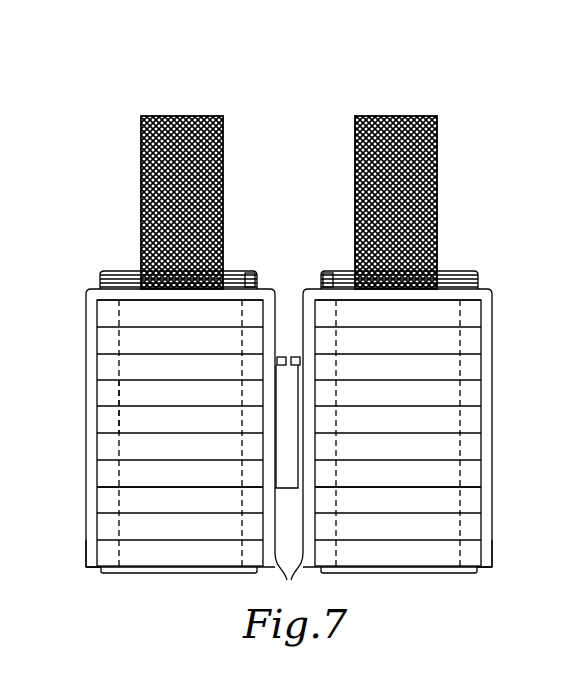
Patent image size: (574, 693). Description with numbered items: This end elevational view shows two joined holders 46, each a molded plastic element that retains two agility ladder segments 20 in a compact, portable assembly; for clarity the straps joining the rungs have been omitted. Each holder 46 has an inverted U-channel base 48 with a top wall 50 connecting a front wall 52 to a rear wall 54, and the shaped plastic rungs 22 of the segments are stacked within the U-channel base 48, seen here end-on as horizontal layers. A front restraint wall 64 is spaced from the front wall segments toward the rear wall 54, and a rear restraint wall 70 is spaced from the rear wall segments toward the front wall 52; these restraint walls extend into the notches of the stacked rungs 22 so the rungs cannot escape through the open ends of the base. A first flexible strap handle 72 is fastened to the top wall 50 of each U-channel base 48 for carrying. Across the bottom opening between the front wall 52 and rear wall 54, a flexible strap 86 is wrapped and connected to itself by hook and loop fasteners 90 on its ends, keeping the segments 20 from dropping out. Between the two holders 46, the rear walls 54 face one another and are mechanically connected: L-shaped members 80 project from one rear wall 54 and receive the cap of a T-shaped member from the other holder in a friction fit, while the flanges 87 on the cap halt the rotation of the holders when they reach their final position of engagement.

The agility ladder segment 20 is at (96, 450).
The rung 22 is at (142, 487).
The holder 46 is at (86, 533).
The U-channel base 48 is at (86, 335).
The top wall 50 is at (178, 300).
The front wall 52 is at (86, 393).
The rear wall 54 is at (289, 578).
The front restraint wall 64 is at (119, 413).
The rear restraint wall 70 is at (242, 400).
The first flexible strap handle 72 is at (180, 116).
The L-shaped member 80 is at (283, 466).
The flexible strap 86 is at (155, 573).
The flange 87 is at (297, 356).
The hook and loop fastener 90 is at (100, 274).